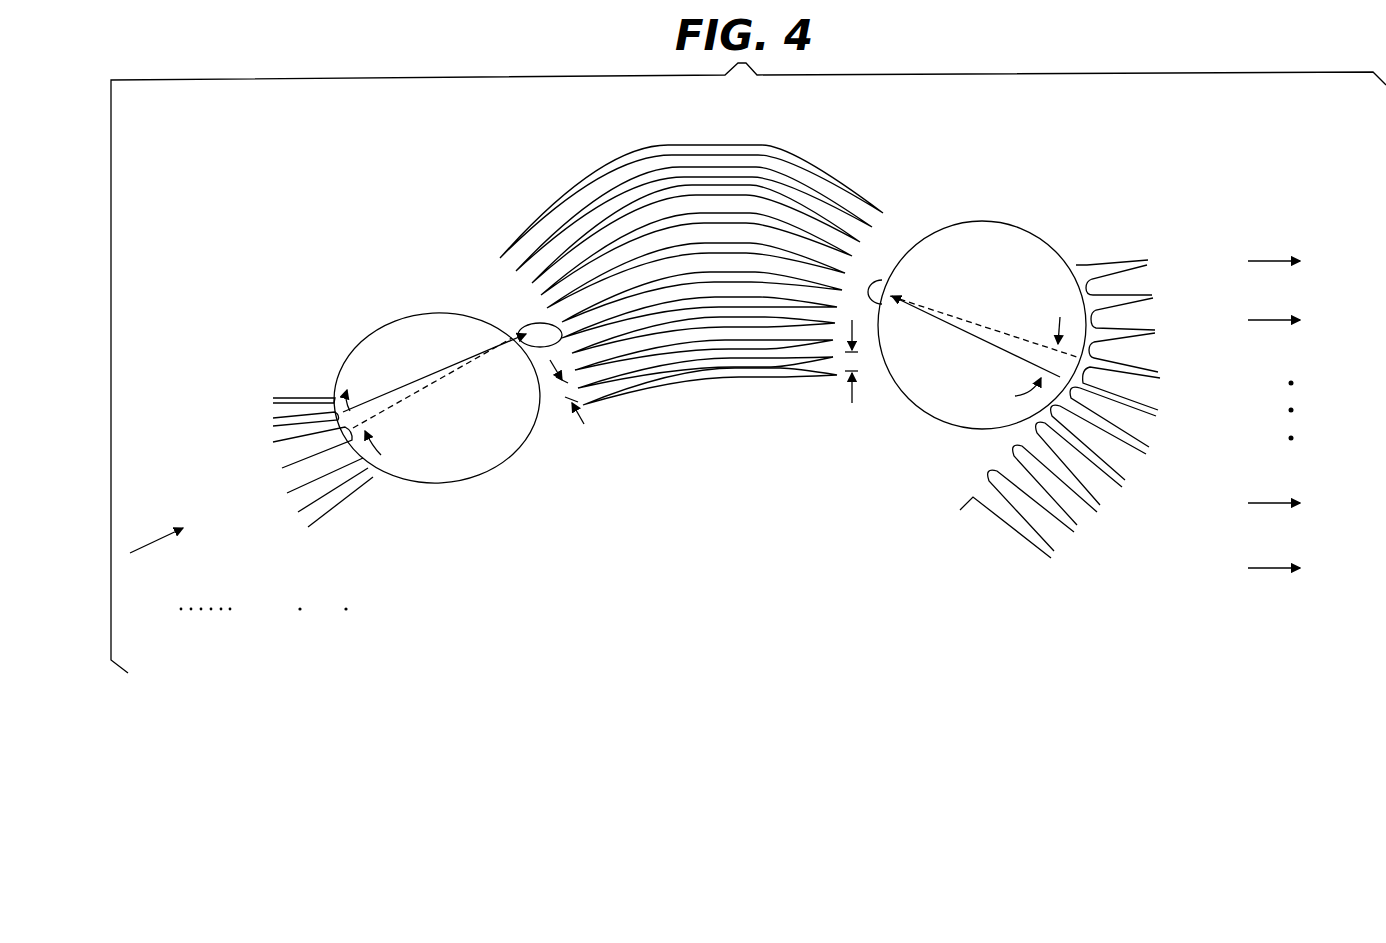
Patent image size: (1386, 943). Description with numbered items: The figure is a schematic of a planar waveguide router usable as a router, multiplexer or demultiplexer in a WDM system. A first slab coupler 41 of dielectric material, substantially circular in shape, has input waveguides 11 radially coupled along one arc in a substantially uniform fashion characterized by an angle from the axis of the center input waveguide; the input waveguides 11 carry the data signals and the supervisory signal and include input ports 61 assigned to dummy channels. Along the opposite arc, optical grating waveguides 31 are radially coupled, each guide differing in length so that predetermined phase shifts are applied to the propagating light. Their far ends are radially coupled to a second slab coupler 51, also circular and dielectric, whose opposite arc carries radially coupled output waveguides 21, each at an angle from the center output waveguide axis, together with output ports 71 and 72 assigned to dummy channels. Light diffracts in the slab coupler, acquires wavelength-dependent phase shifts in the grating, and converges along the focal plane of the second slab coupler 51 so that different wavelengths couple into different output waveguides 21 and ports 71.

The input waveguides 11 is at (215, 410).
The output waveguides 21 is at (1223, 233).
The optical grating waveguides 31 is at (880, 140).
The first slab coupler 41 is at (413, 483).
The second slab coupler 51 is at (938, 422).
The input ports 61 is at (268, 392).
The output ports 71 is at (1113, 515).
The output ports 72 is at (1168, 258).